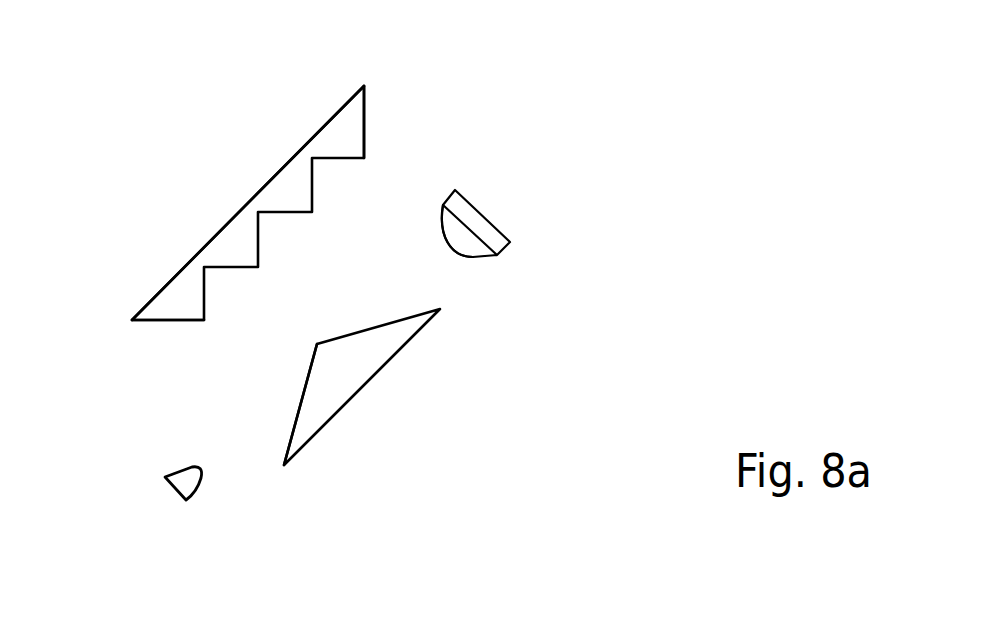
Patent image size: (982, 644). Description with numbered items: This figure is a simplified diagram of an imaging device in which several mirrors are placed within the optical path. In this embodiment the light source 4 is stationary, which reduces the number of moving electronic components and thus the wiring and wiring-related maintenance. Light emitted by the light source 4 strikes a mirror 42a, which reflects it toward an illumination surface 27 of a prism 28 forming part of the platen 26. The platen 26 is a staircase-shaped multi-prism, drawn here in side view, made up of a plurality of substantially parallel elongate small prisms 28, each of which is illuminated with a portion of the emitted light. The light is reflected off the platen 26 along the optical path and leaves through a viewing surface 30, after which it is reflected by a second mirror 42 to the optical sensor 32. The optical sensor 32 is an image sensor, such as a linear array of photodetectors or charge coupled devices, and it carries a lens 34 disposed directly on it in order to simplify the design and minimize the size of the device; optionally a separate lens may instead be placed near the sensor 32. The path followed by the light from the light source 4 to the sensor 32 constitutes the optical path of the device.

The light source 4 is at (187, 482).
The platen 26 is at (222, 228).
The illumination surface 27 is at (158, 322).
The prism 28 is at (292, 195).
The viewing surface 30 is at (365, 113).
The optical sensor 32 is at (490, 239).
The lens 34 is at (472, 243).
The mirror 42 is at (355, 330).
The mirror 42a is at (300, 396).